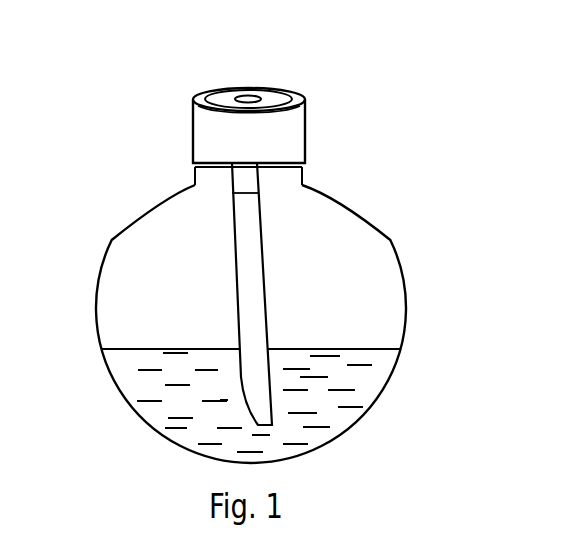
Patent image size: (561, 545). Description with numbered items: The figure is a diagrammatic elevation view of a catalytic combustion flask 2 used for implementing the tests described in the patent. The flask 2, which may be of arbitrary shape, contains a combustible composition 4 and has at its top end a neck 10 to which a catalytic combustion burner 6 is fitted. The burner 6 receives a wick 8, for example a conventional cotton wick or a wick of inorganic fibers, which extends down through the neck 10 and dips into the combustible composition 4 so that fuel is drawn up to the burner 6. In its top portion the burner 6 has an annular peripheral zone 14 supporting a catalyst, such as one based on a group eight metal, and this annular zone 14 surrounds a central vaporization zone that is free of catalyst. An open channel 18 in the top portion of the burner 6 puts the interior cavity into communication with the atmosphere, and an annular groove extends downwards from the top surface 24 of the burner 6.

The catalytic combustion flask 2 is at (124, 405).
The combustible composition 4 is at (173, 425).
The catalytic combustion burner 6 is at (282, 85).
The wick 8 is at (236, 245).
The neck 10 is at (193, 178).
The annular peripheral zone 14 is at (193, 128).
The open channel 18 is at (248, 95).
The top surface 24 is at (217, 97).